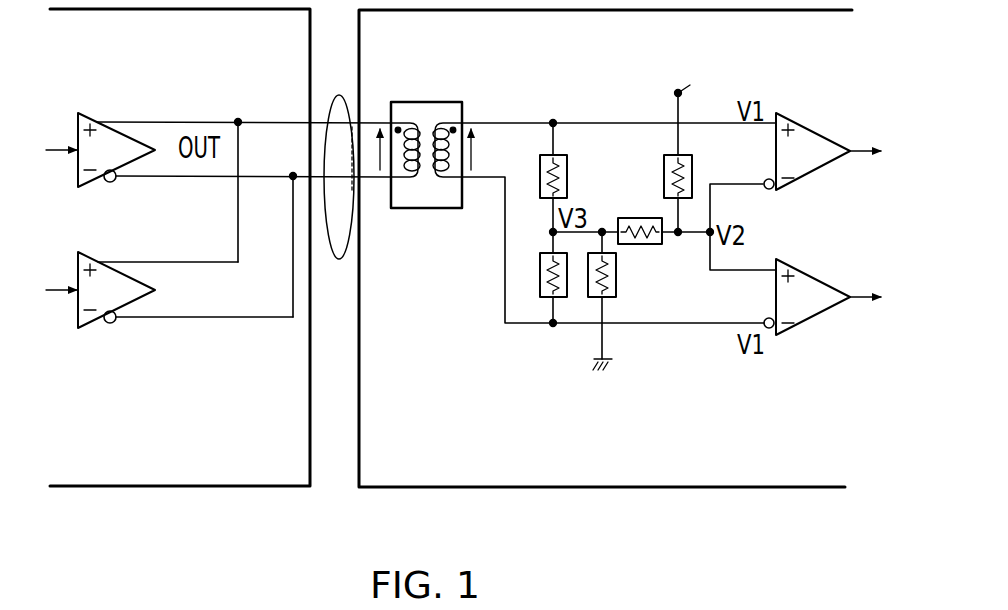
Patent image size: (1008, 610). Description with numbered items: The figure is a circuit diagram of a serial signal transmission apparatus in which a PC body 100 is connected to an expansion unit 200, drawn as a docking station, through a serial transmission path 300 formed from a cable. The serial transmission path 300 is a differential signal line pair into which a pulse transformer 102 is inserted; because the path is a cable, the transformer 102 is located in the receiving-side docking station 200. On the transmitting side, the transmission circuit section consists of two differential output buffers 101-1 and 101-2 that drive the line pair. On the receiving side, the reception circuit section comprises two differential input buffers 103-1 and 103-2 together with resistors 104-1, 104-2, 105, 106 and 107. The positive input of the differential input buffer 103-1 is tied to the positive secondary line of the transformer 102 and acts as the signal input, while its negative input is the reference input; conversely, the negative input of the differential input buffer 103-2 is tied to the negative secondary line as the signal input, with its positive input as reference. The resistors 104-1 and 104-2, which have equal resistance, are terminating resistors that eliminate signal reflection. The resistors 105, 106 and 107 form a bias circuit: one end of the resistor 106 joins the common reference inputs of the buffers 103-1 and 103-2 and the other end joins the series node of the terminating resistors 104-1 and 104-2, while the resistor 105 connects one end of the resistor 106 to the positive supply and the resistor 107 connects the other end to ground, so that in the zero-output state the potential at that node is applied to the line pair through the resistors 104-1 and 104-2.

The PC body 100 is at (258, 487).
The expansion unit 200 is at (555, 488).
The serial transmission path 300 is at (339, 96).
The differential output buffer 101-1 is at (95, 112).
The differential output buffer 101-2 is at (95, 251).
The transformer 102 is at (407, 209).
The differential input buffer 103-1 is at (803, 126).
The differential input buffer 103-2 is at (825, 250).
The terminating resistor 104-1 is at (569, 160).
The terminating resistor 104-2 is at (540, 278).
The resistor 105 is at (663, 183).
The resistor 106 is at (645, 245).
The resistor 107 is at (617, 290).